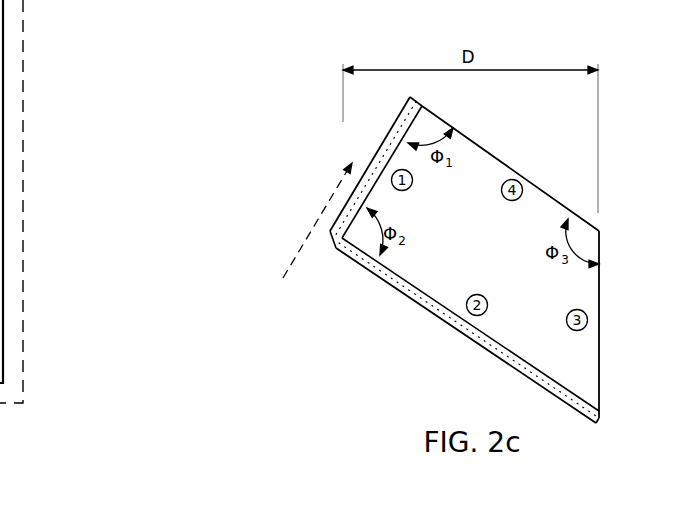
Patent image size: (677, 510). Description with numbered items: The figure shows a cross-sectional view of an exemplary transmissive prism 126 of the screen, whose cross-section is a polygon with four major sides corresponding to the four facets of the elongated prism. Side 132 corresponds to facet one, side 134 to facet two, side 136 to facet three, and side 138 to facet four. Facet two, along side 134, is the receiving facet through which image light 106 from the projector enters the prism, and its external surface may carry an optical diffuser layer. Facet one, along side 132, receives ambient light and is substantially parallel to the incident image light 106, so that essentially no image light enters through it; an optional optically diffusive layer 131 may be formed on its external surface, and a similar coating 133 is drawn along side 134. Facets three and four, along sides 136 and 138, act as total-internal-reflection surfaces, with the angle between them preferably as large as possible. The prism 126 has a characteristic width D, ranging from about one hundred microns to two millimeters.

The image light 106 is at (303, 244).
The prism 126 is at (300, 98).
The optically diffusive layer 131 is at (398, 117).
The side corresponding to facet 1 132 is at (382, 165).
The reflective coating on second surface 133 is at (488, 353).
The side corresponding to facet 2 134 is at (420, 294).
The side corresponding to facet 3 136 is at (600, 322).
The side corresponding to facet 4 138 is at (513, 170).